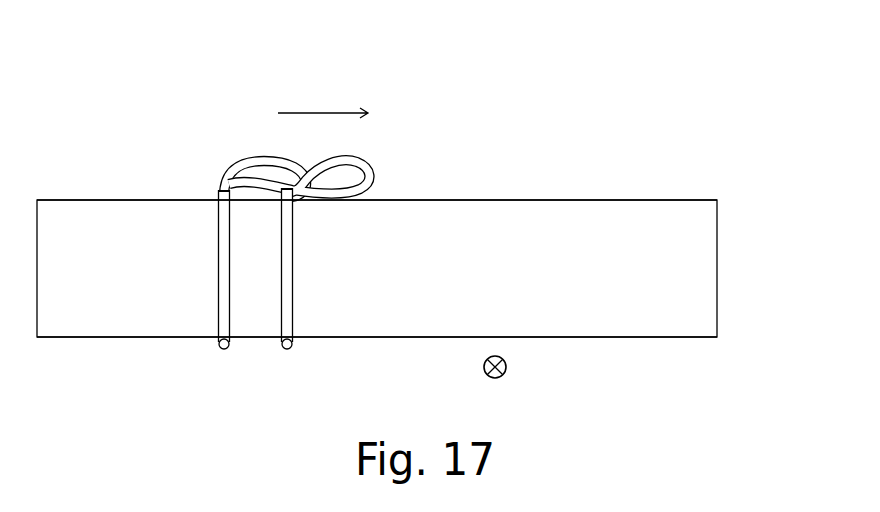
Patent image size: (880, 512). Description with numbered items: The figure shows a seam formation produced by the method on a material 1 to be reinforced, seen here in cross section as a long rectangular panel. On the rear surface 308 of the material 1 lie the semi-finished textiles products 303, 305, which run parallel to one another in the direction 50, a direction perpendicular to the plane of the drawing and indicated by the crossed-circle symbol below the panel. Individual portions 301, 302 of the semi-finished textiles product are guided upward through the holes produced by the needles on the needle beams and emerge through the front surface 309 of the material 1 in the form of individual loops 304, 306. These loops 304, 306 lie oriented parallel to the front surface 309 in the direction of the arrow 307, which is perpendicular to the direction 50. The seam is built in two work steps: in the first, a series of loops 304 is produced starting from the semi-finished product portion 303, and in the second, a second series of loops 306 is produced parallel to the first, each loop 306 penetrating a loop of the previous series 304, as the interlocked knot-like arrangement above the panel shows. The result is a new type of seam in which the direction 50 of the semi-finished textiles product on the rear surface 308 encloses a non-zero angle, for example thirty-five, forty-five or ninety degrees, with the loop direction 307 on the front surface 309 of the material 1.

The material to be reinforced 1 is at (712, 287).
The direction 50 is at (507, 367).
The portion of the semi-finished textiles product 301 is at (218, 262).
The portion of the semi-finished textiles product 302 is at (293, 263).
The semi-finished textiles product 303 is at (218, 346).
The loop 304 is at (248, 165).
The semi-finished textiles product 305 is at (297, 347).
The loop 306 is at (372, 168).
The arrow 307 is at (323, 112).
The rear surface 308 is at (678, 340).
The surface 309 is at (692, 200).